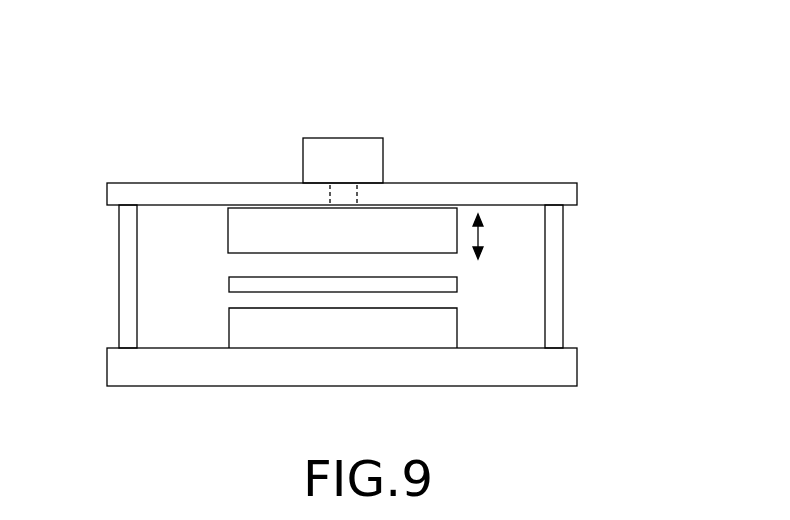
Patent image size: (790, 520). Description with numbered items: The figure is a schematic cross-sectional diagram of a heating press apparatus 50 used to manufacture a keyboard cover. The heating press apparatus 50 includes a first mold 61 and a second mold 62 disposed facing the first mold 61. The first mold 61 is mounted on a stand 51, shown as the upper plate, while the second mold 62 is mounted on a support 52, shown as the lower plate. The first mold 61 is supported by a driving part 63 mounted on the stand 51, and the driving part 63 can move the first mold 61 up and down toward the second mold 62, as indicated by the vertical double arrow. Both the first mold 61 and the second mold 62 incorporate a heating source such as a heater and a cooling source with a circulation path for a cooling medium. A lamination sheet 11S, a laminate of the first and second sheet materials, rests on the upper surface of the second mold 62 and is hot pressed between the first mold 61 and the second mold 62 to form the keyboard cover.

The heating press apparatus 50 is at (539, 104).
The stand 51 is at (555, 184).
The support 52 is at (557, 387).
The first mold 61 is at (237, 235).
The second mold 62 is at (237, 330).
The driving part 63 is at (335, 143).
The lamination sheet 11S is at (237, 282).